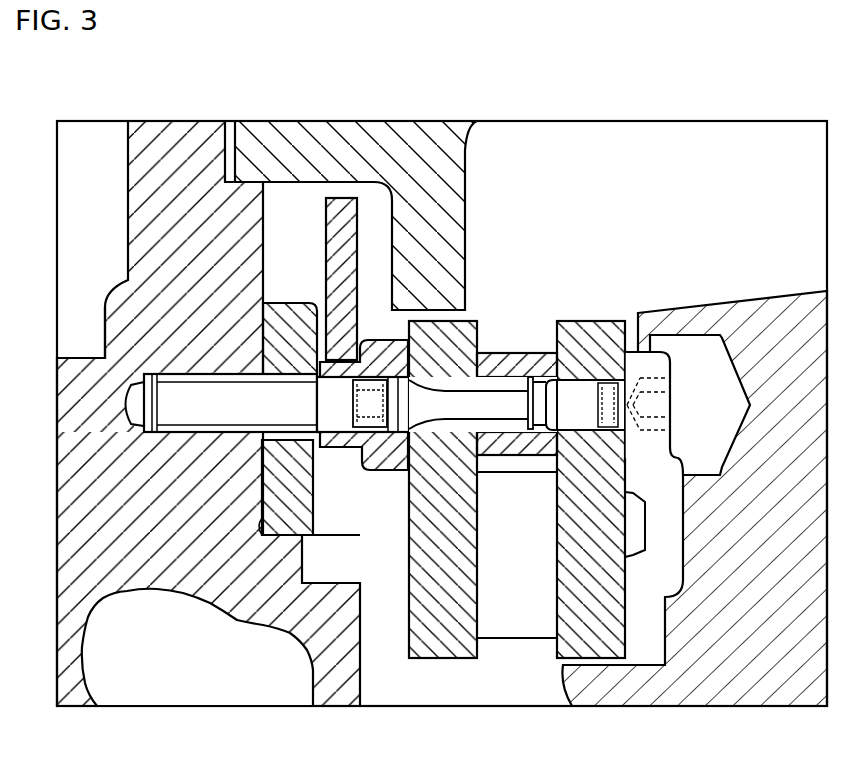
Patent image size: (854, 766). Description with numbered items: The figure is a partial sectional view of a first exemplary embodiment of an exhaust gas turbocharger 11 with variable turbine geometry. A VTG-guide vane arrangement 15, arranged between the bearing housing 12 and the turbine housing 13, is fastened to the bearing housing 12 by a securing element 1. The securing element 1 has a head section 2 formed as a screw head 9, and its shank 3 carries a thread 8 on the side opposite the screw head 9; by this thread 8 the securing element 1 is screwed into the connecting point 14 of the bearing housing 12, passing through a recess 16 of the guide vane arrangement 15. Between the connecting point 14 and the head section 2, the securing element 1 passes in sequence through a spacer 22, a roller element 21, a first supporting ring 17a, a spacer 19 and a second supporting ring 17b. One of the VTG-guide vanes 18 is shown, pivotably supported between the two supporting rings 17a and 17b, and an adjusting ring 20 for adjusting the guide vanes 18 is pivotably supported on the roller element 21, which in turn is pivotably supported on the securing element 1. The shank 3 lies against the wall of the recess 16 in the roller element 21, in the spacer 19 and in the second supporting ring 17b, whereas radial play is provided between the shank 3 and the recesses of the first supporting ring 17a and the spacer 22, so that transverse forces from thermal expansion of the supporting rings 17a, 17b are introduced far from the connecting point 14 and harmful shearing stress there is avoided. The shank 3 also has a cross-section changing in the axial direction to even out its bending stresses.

The securing element 1 is at (376, 372).
The shank 3 is at (520, 386).
The head section 2 is at (694, 489).
The screw head 9 is at (656, 366).
The thread 8 is at (376, 372).
The exhaust gas turbocharger 11 is at (686, 101).
The bearing housing 12 is at (311, 412).
The turbine housing 13 is at (347, 130).
The connecting point 14 is at (118, 396).
The VTG-guide vane arrangement 15 is at (530, 682).
The recess 16 is at (491, 437).
The first supporting ring 17a is at (455, 528).
The second supporting ring 17b is at (593, 612).
The VTG-guide vanes 18 is at (513, 641).
The spacer 19 is at (526, 440).
The adjusting ring 20 is at (334, 246).
The roller element 21 is at (386, 346).
The spacer 22 is at (305, 497).